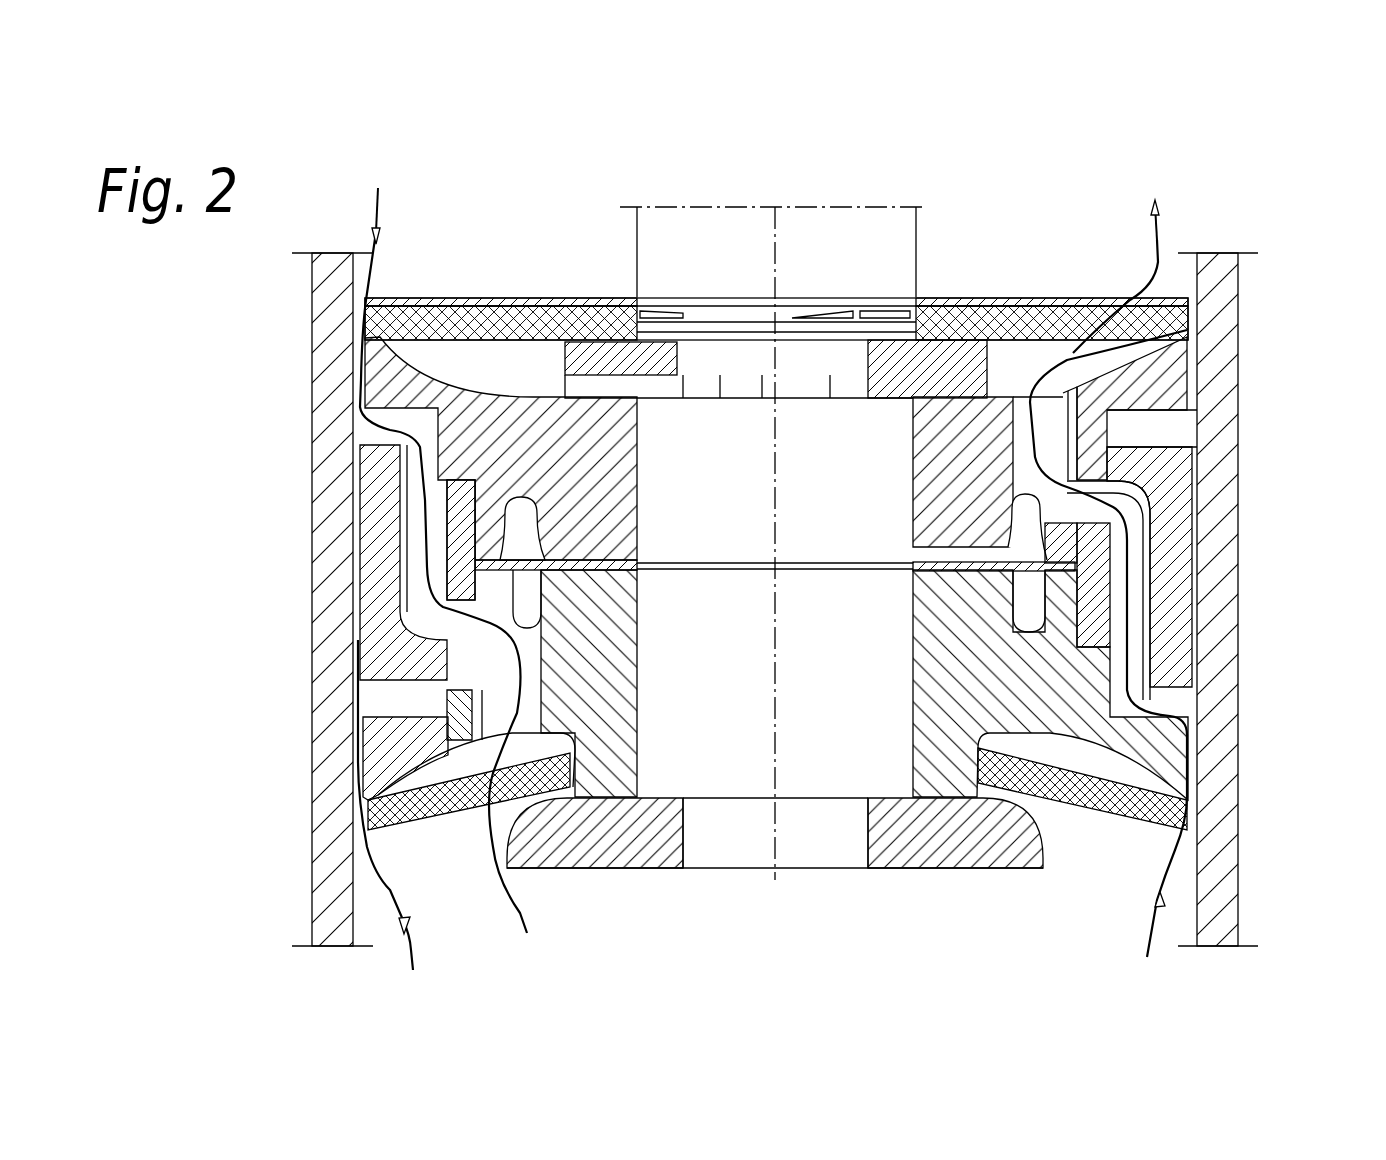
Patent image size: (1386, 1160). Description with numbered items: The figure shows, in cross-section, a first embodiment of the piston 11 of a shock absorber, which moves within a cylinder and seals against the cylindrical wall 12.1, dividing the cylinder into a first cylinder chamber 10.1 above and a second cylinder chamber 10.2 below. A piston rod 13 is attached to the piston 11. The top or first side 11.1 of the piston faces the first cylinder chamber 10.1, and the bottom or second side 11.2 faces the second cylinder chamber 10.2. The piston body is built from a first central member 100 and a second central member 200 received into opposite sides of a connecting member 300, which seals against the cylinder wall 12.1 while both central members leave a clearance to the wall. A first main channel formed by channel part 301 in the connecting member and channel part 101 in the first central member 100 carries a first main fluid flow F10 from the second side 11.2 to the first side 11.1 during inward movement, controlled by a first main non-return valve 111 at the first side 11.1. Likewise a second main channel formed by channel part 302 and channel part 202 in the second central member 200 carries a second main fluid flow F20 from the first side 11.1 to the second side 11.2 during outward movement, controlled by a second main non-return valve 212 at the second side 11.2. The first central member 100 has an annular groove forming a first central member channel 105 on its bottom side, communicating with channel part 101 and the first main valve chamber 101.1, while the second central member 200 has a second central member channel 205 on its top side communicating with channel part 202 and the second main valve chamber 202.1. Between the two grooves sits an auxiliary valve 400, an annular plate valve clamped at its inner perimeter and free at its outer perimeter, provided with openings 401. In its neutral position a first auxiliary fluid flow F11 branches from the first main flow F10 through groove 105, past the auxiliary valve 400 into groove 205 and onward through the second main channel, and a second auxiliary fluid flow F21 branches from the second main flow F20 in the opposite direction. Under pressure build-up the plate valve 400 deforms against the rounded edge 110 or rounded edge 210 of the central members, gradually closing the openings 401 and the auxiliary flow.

The first cylinder chamber 10.1 is at (528, 273).
The second cylinder chamber 10.2 is at (612, 923).
The piston 11 is at (460, 282).
The first side of the piston 11.1 is at (578, 285).
The second side of the piston 11.2 is at (457, 888).
The cylindrical wall 12.1 is at (334, 300).
The piston rod 13 is at (885, 244).
The first central member 100 is at (1167, 352).
The first main channel part 101 is at (1140, 428).
The first main valve chamber 101.1 is at (1050, 350).
The first central member channel 105 is at (515, 508).
The rounded edge 110 is at (545, 515).
The first main non-return valve 111 is at (1012, 300).
The second central member 200 is at (1175, 760).
The second main channel part 202 is at (510, 700).
The second main valve chamber 202.1 is at (471, 848).
The second central member channel 205 is at (490, 587).
The rounded edge 210 is at (560, 570).
The second main non-return valve 212 is at (1073, 783).
The connecting member 300 is at (1175, 582).
The first main channel part 301 is at (1140, 630).
The second main channel part 302 is at (433, 552).
The auxiliary valve 400 is at (490, 550).
The openings 401 is at (560, 560).
The first main fluid flow F10 is at (1155, 205).
The first auxiliary fluid flow F11 is at (365, 292).
The second main fluid flow F20 is at (378, 190).
The second auxiliary fluid flow F21 is at (518, 605).